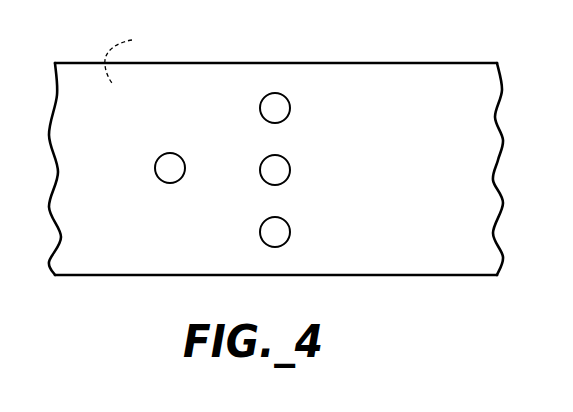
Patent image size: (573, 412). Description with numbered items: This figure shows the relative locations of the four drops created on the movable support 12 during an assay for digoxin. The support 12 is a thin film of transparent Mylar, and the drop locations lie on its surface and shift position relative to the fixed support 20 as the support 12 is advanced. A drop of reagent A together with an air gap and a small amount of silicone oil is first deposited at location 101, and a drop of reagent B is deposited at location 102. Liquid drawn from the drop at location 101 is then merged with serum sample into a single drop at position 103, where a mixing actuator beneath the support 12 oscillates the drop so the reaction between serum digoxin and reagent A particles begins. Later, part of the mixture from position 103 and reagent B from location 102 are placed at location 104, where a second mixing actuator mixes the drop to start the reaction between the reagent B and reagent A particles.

The support 12 is at (362, 63).
The fixed support 20 is at (130, 58).
The location 101 is at (290, 106).
The location 102 is at (290, 230).
The position 103 is at (290, 168).
The location 104 is at (178, 155).